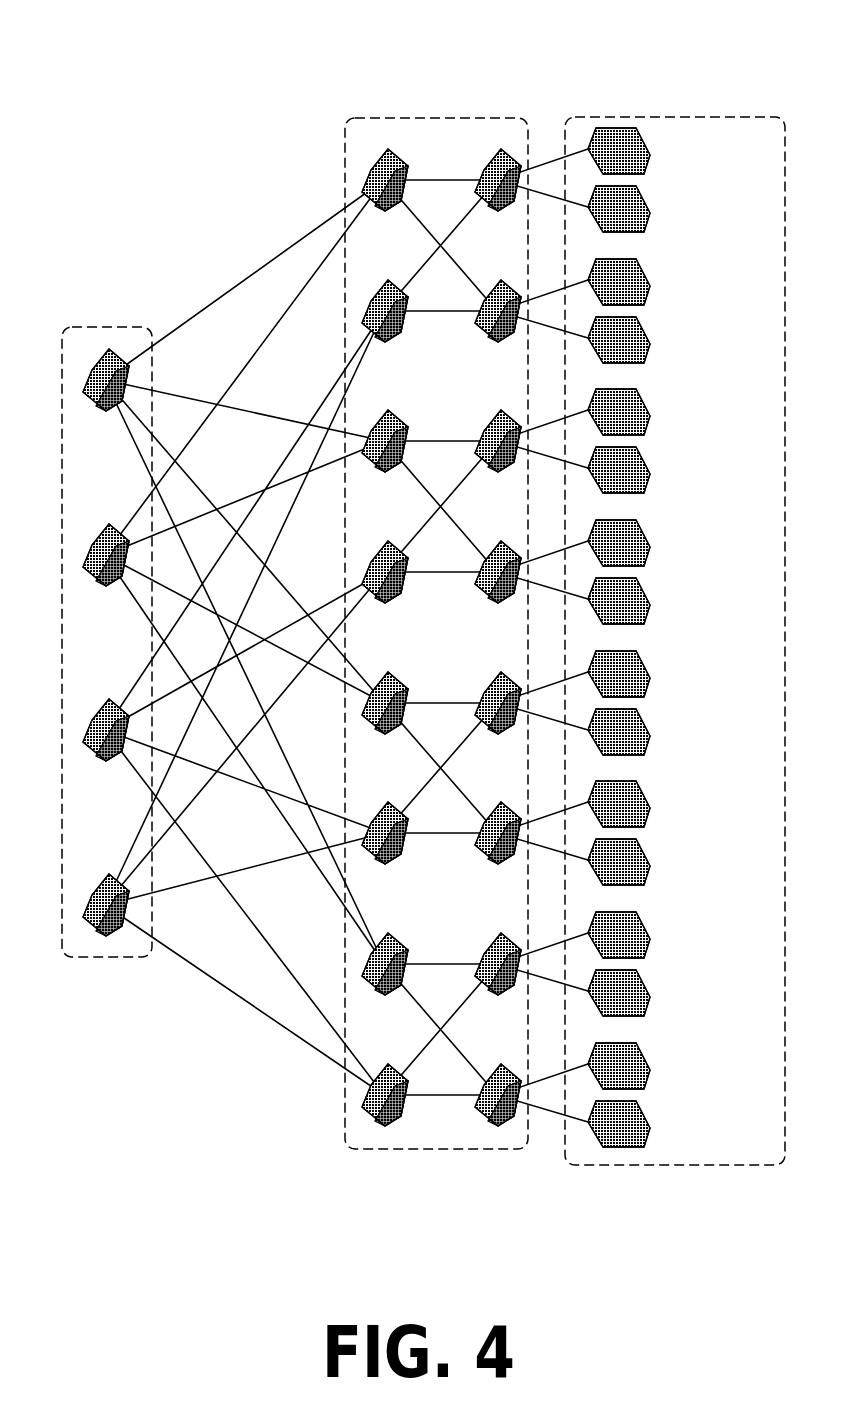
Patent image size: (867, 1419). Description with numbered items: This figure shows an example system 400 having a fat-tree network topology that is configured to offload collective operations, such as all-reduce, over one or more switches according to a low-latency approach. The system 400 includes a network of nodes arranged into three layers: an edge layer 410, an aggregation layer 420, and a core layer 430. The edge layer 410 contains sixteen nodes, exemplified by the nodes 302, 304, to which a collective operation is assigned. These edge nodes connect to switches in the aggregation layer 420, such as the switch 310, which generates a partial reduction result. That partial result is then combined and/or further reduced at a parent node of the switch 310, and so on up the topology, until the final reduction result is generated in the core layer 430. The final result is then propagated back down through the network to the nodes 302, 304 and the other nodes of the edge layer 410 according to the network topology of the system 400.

The system 400 is at (137, 60).
The core layer 430 is at (107, 957).
The aggregation layer 420 is at (407, 674).
The edge layer 410 is at (675, 671).
The switch 310 is at (497, 1128).
The node 304 is at (645, 1056).
The node 302 is at (645, 1118).